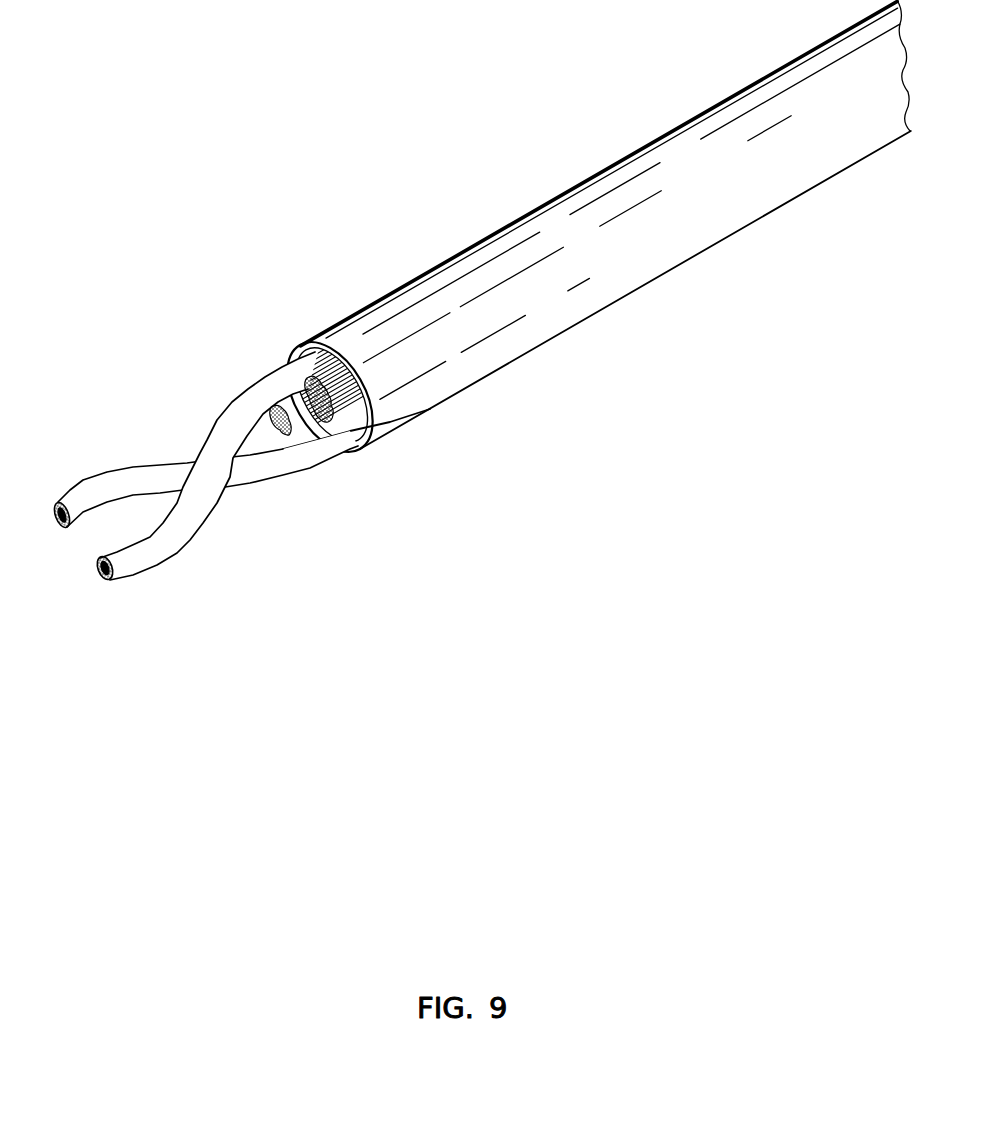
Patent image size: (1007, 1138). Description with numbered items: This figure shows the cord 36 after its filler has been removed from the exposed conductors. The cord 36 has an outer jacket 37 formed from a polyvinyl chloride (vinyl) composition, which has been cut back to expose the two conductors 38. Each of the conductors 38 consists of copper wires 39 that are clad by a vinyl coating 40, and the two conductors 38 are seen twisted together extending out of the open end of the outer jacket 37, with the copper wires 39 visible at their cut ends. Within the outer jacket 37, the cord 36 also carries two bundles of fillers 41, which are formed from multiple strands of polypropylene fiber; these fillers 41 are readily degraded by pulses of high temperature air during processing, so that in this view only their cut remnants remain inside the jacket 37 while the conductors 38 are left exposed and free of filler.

The cord 36 is at (613, 243).
The outer jacket 37 is at (432, 288).
The conductors 38 is at (202, 556).
The copper wires 39 is at (60, 539).
The vinyl coating 40 is at (112, 477).
The fillers 41 is at (331, 439).